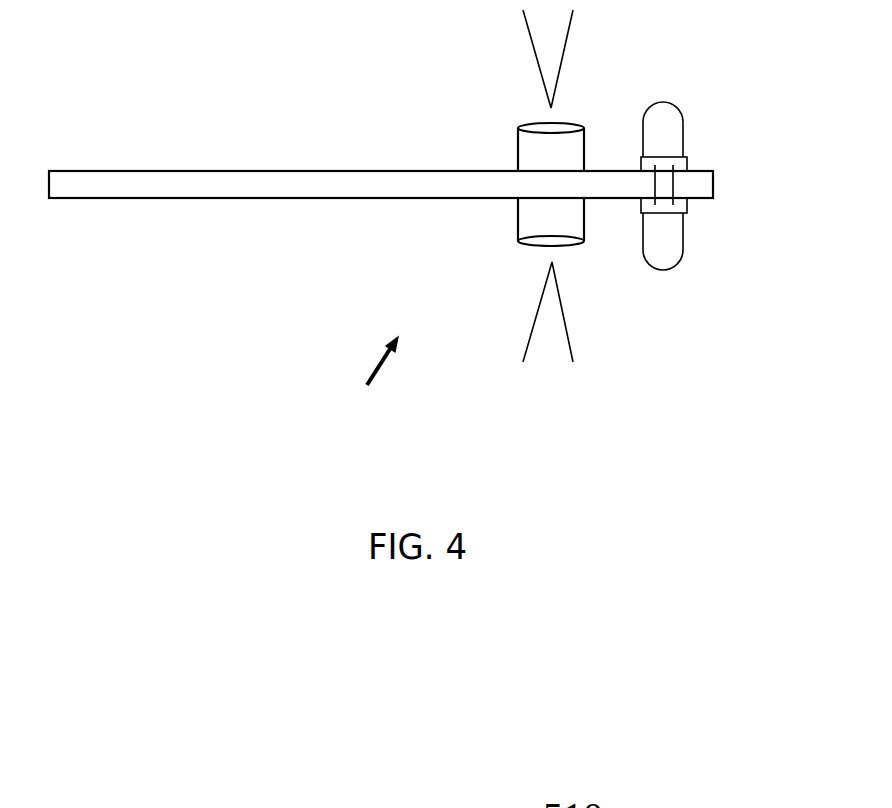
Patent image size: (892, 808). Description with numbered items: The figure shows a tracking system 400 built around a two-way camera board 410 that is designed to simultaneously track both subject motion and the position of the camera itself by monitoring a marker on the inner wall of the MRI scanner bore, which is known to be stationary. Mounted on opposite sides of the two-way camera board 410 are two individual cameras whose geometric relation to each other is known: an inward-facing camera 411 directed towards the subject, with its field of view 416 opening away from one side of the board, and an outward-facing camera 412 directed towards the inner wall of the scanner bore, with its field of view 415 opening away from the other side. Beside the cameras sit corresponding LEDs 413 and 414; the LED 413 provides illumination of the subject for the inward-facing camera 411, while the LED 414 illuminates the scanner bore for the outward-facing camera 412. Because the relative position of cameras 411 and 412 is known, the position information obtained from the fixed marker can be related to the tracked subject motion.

The tracking system 400 is at (360, 383).
The two-way camera board 410 is at (100, 171).
The inward-facing camera 411 is at (518, 239).
The outward-facing camera 412 is at (518, 144).
The LED 413 is at (683, 248).
The LED 414 is at (683, 114).
The field of view 415 is at (527, 34).
The field of view 416 is at (571, 342).